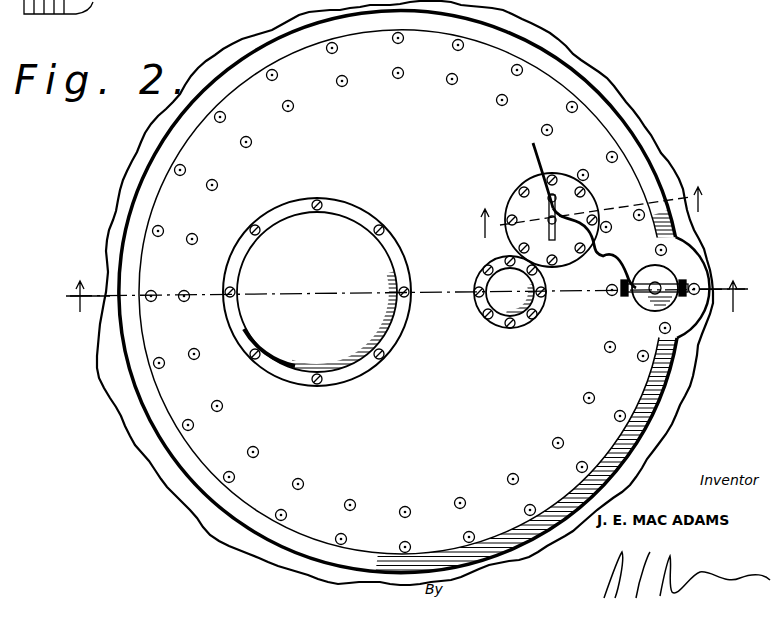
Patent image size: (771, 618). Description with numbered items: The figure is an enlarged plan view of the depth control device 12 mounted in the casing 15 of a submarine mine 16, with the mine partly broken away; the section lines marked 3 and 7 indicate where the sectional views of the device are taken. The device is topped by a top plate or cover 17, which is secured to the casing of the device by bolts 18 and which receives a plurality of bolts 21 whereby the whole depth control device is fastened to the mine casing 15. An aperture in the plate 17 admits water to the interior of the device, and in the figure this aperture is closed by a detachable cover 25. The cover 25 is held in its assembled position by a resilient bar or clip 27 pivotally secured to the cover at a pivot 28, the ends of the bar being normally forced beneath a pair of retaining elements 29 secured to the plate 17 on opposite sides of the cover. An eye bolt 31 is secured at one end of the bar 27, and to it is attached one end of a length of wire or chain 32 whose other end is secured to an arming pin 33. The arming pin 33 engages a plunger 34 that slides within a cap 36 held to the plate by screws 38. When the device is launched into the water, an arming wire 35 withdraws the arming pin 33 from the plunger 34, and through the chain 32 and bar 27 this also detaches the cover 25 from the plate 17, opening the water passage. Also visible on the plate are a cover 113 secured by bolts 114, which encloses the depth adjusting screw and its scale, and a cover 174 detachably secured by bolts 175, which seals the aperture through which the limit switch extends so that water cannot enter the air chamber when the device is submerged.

The section line 3- 3 is at (407, 306).
The section line 7- 7 is at (592, 222).
The depth control device 12 is at (137, 262).
The casing 15 is at (574, 49).
The submarine mine 16 is at (141, 139).
The top plate or cover 17 is at (458, 415).
The bolts 18 is at (251, 141).
The bolts 21 is at (396, 40).
The detachable cover 25 is at (660, 308).
The resilient bar or clip 27 is at (636, 301).
The pivot 28 is at (664, 284).
The retaining elements 29 is at (698, 284).
The eye bolt 31 is at (646, 283).
The wire or chain 32 is at (616, 261).
The arming pin 33 is at (556, 178).
The plunger 34 is at (548, 233).
The arming wire 35 is at (532, 147).
The cap 36 is at (538, 207).
The screws 38 is at (518, 193).
The cover 113 is at (487, 287).
The bolts 114 is at (484, 268).
The cover 174 is at (317, 292).
The bolts 175 is at (256, 224).